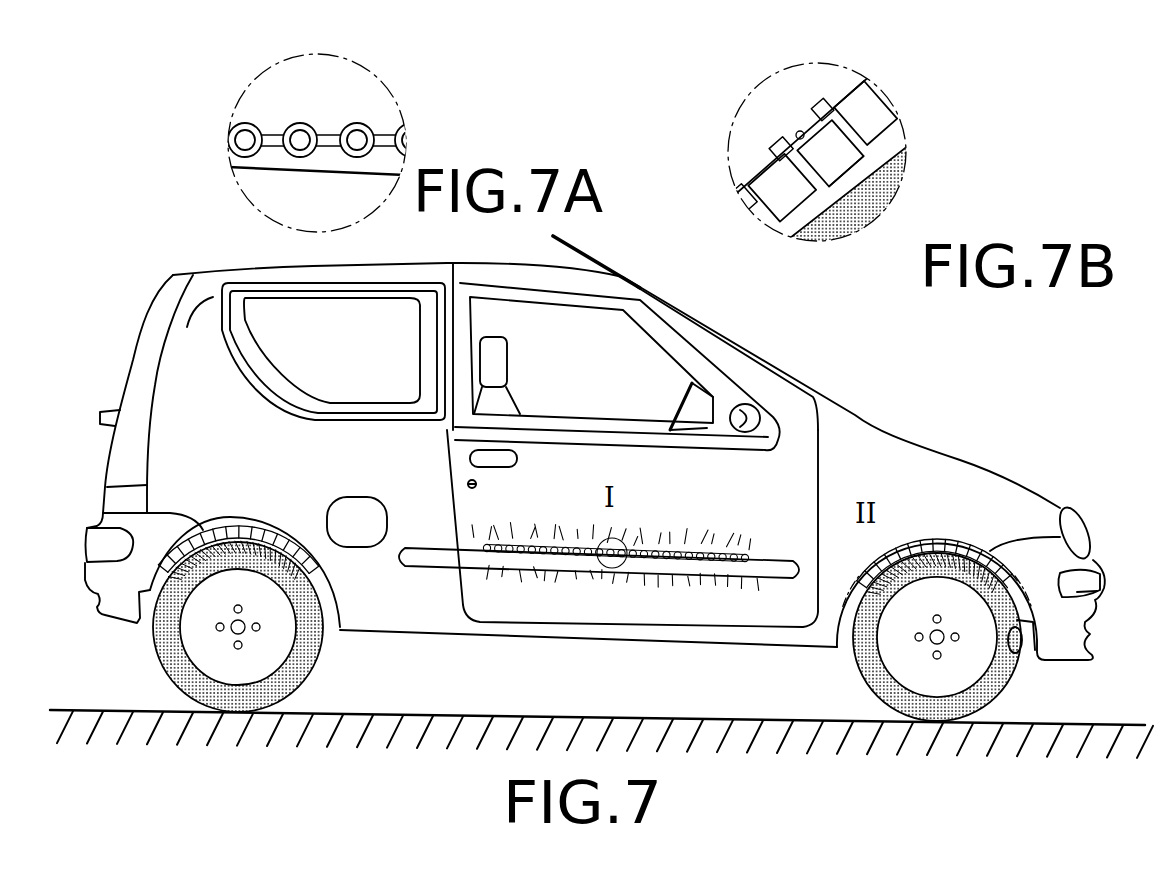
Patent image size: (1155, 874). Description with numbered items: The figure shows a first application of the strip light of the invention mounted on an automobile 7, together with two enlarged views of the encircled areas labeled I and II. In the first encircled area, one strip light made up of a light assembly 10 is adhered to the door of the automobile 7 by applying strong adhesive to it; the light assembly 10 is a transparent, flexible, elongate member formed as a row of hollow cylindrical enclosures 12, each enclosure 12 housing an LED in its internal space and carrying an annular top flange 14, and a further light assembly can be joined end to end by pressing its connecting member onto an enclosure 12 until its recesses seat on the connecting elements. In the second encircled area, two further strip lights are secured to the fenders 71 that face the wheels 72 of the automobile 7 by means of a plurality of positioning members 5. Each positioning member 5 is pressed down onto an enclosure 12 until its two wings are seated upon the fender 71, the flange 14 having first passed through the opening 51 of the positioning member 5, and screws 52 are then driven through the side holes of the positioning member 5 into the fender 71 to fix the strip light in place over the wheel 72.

In FIG. 7B, the positioning member 5 is at (828, 120).
In FIG. 7, the automobile 7 is at (950, 468).
In FIG. 7A, the automobile 7 is at (263, 183).
In FIG. 7B, the automobile 7 is at (770, 97).
In FIG. 7, the light assembly 10 is at (233, 525).
In FIG. 7A, the light assembly 10 is at (268, 117).
In FIG. 7B, the enclosure 12 is at (780, 207).
In FIG. 7B, the annular top flange 14 is at (850, 187).
In FIG. 7B, the opening 51 is at (853, 93).
In FIG. 7B, the screw 52 is at (803, 147).
In FIG. 7, the fender 71 is at (147, 593).
In FIG. 7, the wheel 72 is at (167, 667).
In FIG. 7B, the wheel 72 is at (847, 237).